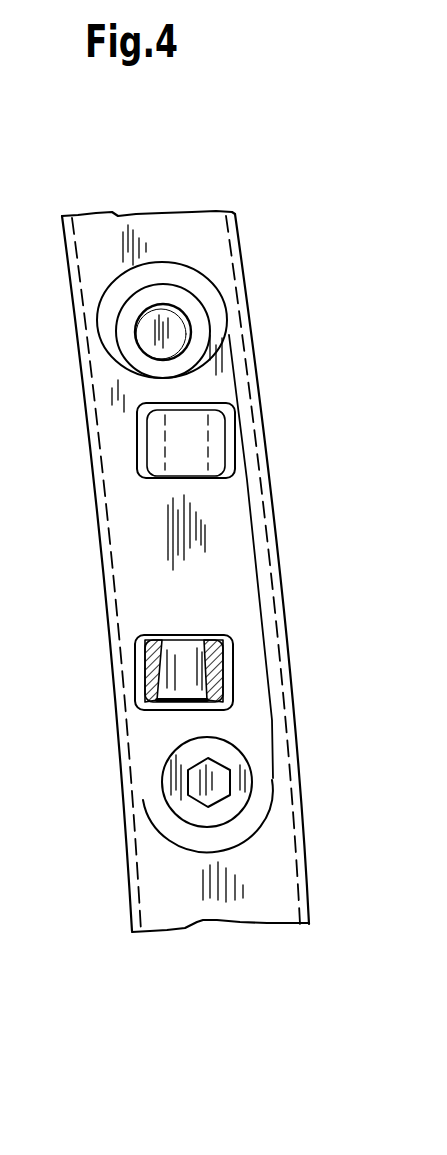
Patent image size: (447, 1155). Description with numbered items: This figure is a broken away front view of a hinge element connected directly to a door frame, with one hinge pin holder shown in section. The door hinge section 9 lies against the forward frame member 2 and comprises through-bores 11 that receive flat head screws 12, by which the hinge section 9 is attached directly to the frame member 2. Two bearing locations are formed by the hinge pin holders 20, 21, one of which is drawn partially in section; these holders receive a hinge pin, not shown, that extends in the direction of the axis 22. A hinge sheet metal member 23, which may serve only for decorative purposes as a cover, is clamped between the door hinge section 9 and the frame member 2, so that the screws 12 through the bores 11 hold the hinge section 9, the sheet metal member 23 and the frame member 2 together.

The forward frame member 2 is at (112, 257).
The door hinge section 9 is at (150, 535).
The through-bore 11 is at (175, 317).
The flat head screw 12 is at (185, 808).
The hinge pin holder 20 is at (197, 436).
The hinge pin holder 21 is at (222, 662).
The axis 22 is at (183, 593).
The hinge sheet metal member 23 is at (292, 763).